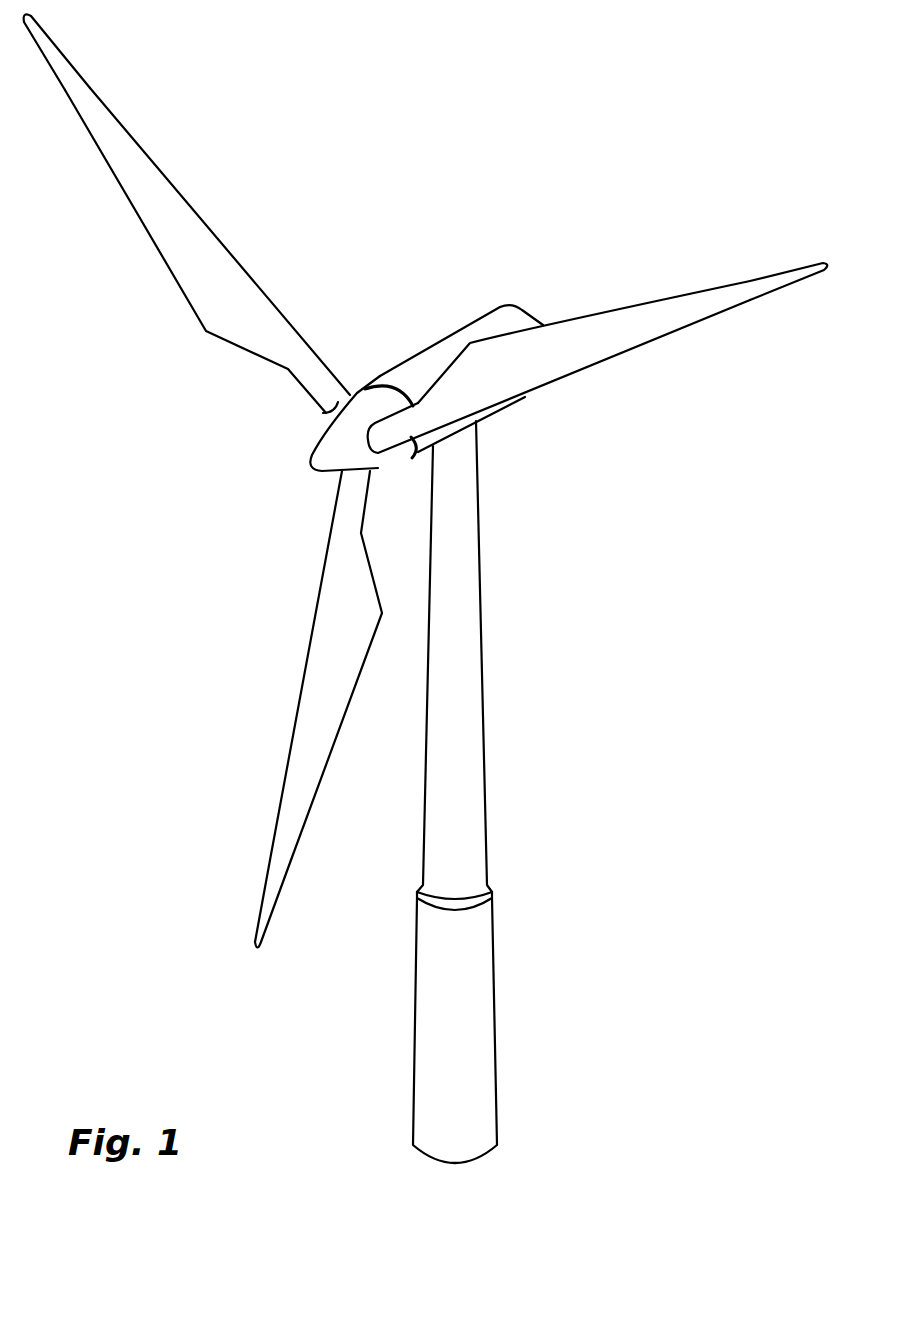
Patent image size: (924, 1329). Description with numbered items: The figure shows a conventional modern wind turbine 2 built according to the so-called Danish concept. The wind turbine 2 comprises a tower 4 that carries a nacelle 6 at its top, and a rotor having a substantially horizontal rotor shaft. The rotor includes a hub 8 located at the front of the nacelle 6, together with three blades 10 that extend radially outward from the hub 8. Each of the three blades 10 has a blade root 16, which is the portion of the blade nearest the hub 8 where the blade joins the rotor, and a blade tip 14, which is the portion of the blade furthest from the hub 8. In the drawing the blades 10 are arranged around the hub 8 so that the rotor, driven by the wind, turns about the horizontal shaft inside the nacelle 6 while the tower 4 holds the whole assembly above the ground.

The wind turbine 2 is at (590, 732).
The tower 4 is at (473, 657).
The nacelle 6 is at (418, 367).
The hub 8 is at (330, 450).
The blade 10 is at (218, 302).
The blade tip 14 is at (65, 70).
The blade root 16 is at (337, 405).